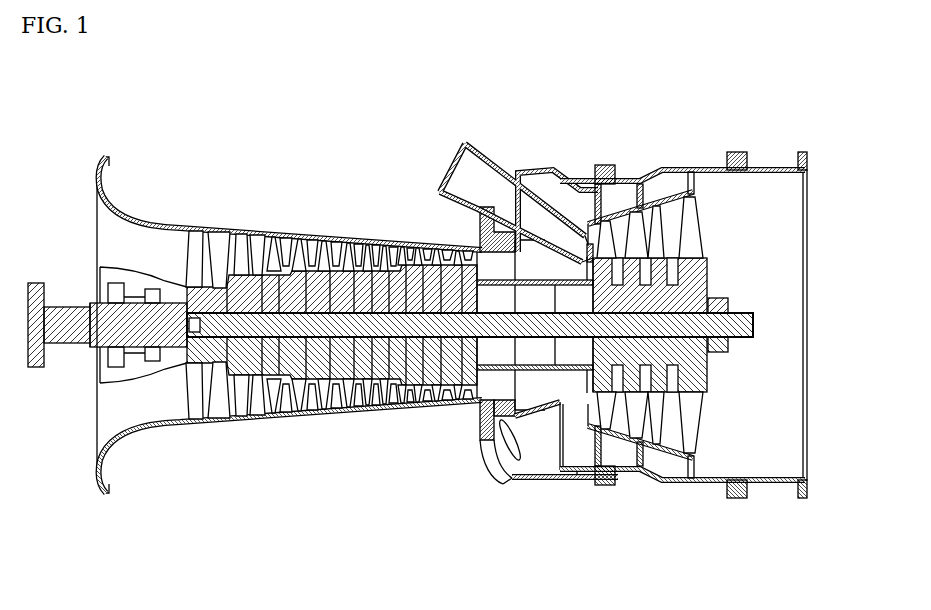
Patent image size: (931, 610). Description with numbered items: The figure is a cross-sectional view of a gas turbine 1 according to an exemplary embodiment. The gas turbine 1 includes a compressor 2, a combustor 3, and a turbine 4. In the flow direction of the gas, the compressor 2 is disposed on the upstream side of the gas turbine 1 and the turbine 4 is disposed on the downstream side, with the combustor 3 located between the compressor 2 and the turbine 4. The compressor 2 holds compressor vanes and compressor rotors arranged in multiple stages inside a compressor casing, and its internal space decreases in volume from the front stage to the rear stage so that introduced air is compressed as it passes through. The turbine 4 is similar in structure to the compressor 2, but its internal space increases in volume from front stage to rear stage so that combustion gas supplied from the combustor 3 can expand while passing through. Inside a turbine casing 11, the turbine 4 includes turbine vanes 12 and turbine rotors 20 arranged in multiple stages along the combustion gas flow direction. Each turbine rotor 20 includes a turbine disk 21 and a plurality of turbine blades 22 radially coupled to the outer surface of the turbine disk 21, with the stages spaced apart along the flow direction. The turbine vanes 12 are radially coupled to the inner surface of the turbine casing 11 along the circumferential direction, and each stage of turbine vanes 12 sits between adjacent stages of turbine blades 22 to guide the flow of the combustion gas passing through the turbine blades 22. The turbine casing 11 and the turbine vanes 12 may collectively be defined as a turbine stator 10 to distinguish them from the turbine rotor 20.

The gas turbine 1 is at (123, 97).
The compressor 2 is at (262, 214).
The combustor 3 is at (489, 143).
The turbine 4 is at (711, 195).
The turbine stator 10 is at (688, 540).
The turbine casing 11 is at (677, 457).
The turbine vanes 12 is at (642, 432).
The turbine rotor 20 is at (860, 240).
The turbine disk 21 is at (713, 287).
The turbine blades 22 is at (697, 240).